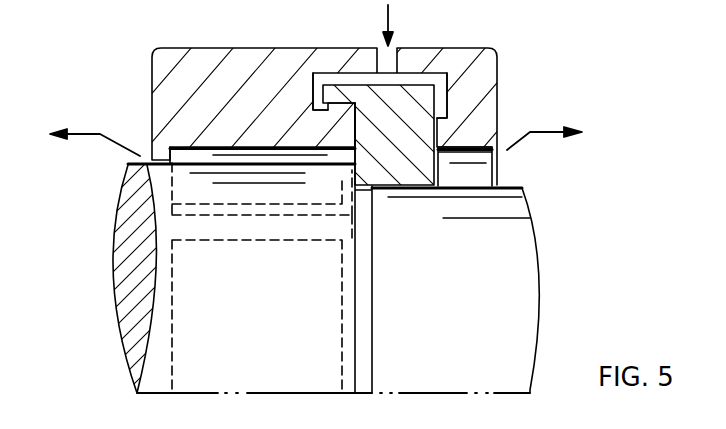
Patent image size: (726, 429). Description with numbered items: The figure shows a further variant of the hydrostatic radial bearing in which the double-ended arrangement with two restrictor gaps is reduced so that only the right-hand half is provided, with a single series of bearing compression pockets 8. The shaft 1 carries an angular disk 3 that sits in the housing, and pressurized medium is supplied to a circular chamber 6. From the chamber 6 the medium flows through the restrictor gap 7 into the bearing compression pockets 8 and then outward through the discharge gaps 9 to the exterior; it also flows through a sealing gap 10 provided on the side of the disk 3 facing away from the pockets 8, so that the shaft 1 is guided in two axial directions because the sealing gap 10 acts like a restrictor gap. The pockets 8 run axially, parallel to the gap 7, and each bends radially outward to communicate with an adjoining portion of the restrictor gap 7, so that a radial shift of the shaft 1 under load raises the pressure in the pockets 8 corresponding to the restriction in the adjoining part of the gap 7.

The shaft 1 is at (503, 238).
The disk 3 is at (448, 76).
The circular chamber 6 is at (415, 78).
The restrictor gap 7 is at (316, 104).
The bearing compression pockets 8 is at (197, 155).
The discharge gaps 9 is at (143, 160).
The sealing gap 10 is at (438, 127).